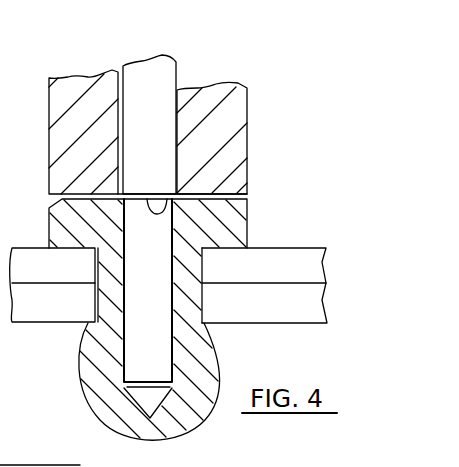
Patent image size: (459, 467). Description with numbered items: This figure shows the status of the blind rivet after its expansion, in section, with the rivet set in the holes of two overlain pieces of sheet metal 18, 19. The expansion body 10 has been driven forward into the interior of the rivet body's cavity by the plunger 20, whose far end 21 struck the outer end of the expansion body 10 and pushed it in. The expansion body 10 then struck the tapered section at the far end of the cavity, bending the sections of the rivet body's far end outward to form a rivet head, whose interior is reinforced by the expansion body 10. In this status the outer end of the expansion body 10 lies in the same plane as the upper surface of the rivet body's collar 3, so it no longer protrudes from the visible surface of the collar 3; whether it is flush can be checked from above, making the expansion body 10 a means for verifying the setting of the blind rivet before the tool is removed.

The collar 3 is at (223, 221).
The expansion body 10 is at (147, 310).
The piece of sheet metal 18 is at (303, 264).
The piece of sheet metal 19 is at (297, 308).
The plunger 20 is at (143, 122).
The far end of the plunger 21 is at (198, 177).